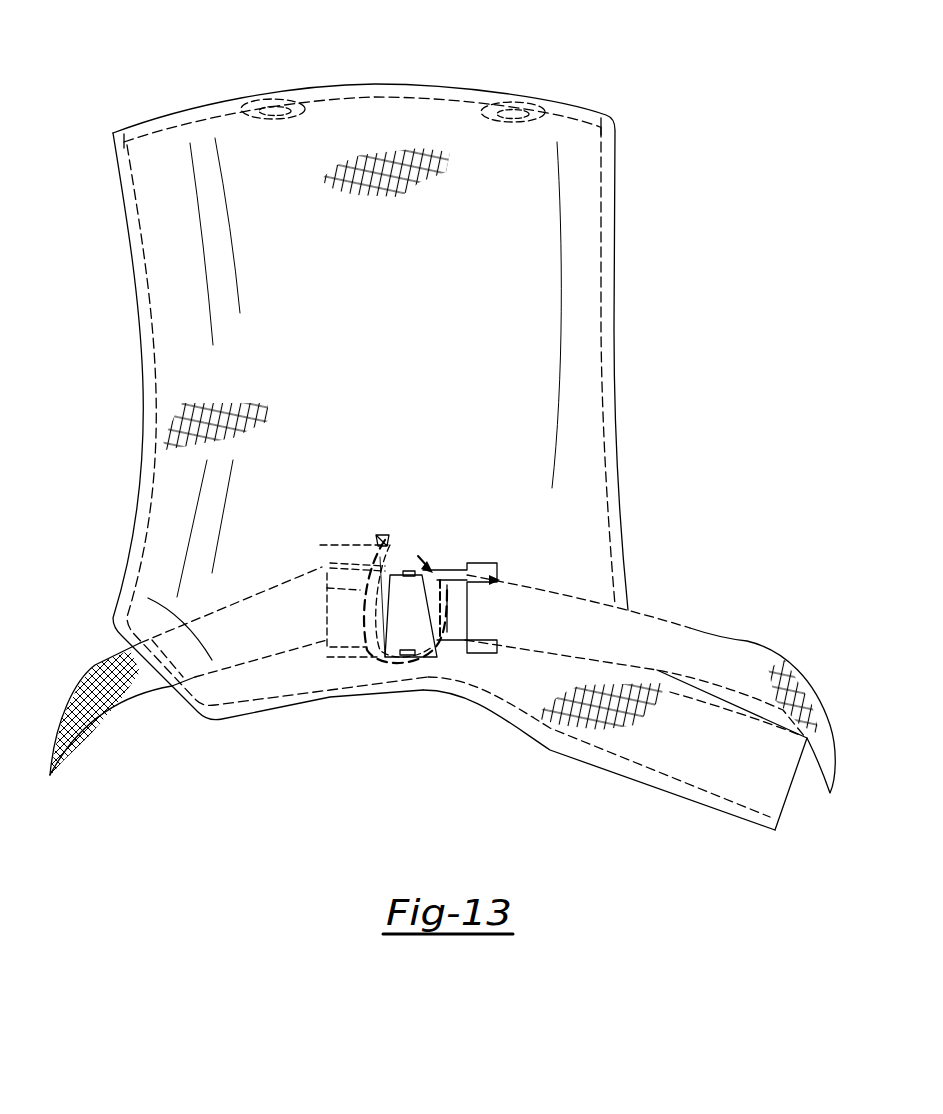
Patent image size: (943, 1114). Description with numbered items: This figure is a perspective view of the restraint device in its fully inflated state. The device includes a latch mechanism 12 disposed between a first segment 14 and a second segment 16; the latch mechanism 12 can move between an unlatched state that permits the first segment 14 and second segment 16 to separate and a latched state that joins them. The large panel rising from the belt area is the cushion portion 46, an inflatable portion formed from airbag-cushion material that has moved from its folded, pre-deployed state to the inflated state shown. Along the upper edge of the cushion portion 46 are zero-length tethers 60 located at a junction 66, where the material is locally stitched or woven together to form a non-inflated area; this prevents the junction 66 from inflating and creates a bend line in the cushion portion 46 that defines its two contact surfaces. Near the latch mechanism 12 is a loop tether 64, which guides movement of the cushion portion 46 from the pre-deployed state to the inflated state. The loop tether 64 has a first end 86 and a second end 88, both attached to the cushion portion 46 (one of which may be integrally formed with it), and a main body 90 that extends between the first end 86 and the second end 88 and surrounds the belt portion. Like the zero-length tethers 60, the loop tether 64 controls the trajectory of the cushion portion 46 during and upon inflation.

The latch mechanism 12 is at (320, 571).
The first segment 14 is at (95, 665).
The second segment 16 is at (748, 641).
The cushion portion 46 is at (527, 250).
The zero-length tether 60 is at (276, 100).
The loop tether 64 is at (362, 618).
The junction 66 is at (367, 100).
The first end 86 is at (419, 555).
The second end 88 is at (383, 535).
The main body 90 is at (375, 650).